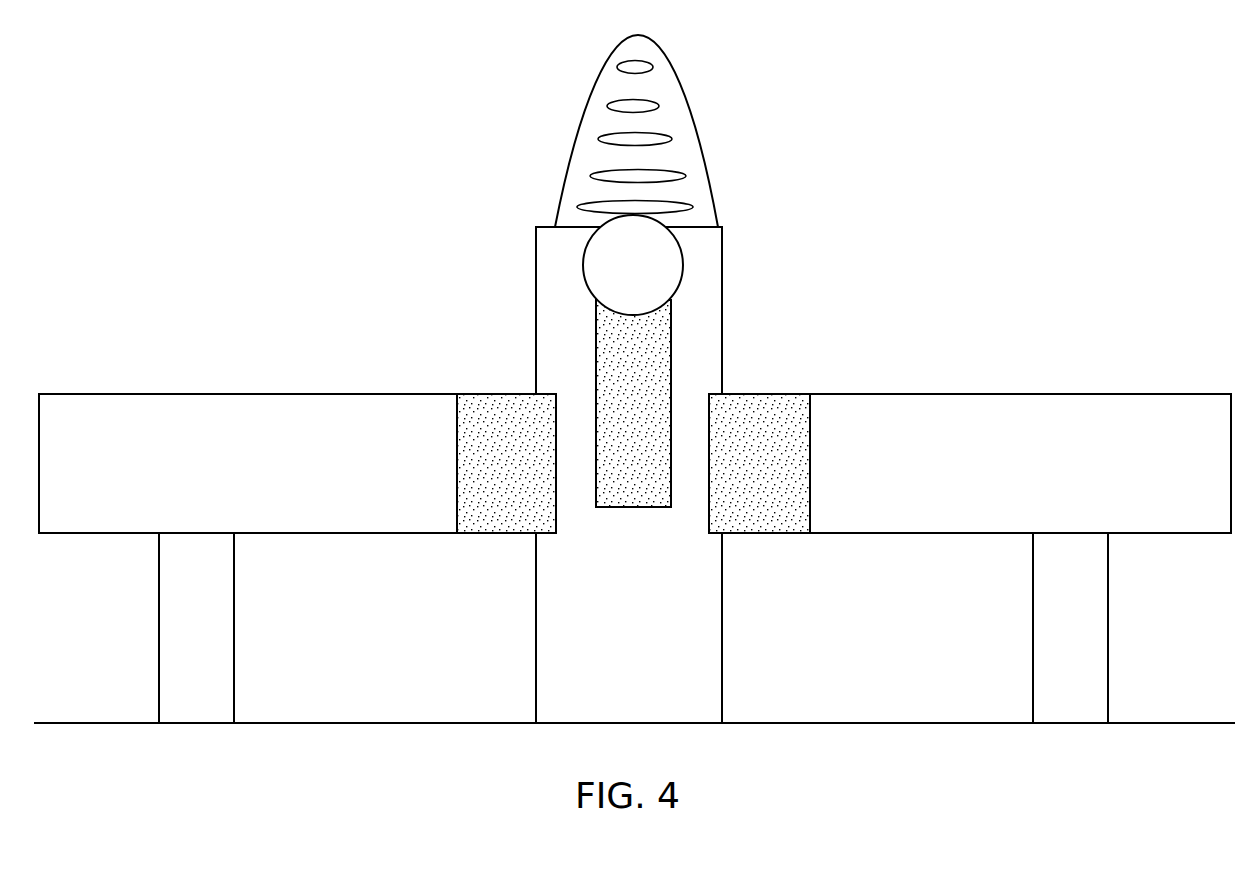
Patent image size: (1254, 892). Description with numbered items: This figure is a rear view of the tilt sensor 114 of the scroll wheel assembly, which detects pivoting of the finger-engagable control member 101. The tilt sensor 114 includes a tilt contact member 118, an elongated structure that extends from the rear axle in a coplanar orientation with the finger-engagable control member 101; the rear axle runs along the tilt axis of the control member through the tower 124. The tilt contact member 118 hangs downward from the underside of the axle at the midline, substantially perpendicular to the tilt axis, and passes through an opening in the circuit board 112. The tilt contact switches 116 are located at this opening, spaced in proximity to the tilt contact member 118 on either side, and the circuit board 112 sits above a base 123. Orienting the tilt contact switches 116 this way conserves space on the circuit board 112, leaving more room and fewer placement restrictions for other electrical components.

The finger-engagable control member 101 is at (685, 88).
The tilt sensor 114 is at (597, 221).
The tower 124 is at (708, 290).
The tilt contact member 118 is at (618, 367).
The circuit board 112 is at (172, 430).
The tilt contact switches 116 is at (472, 428).
The base 123 is at (167, 742).